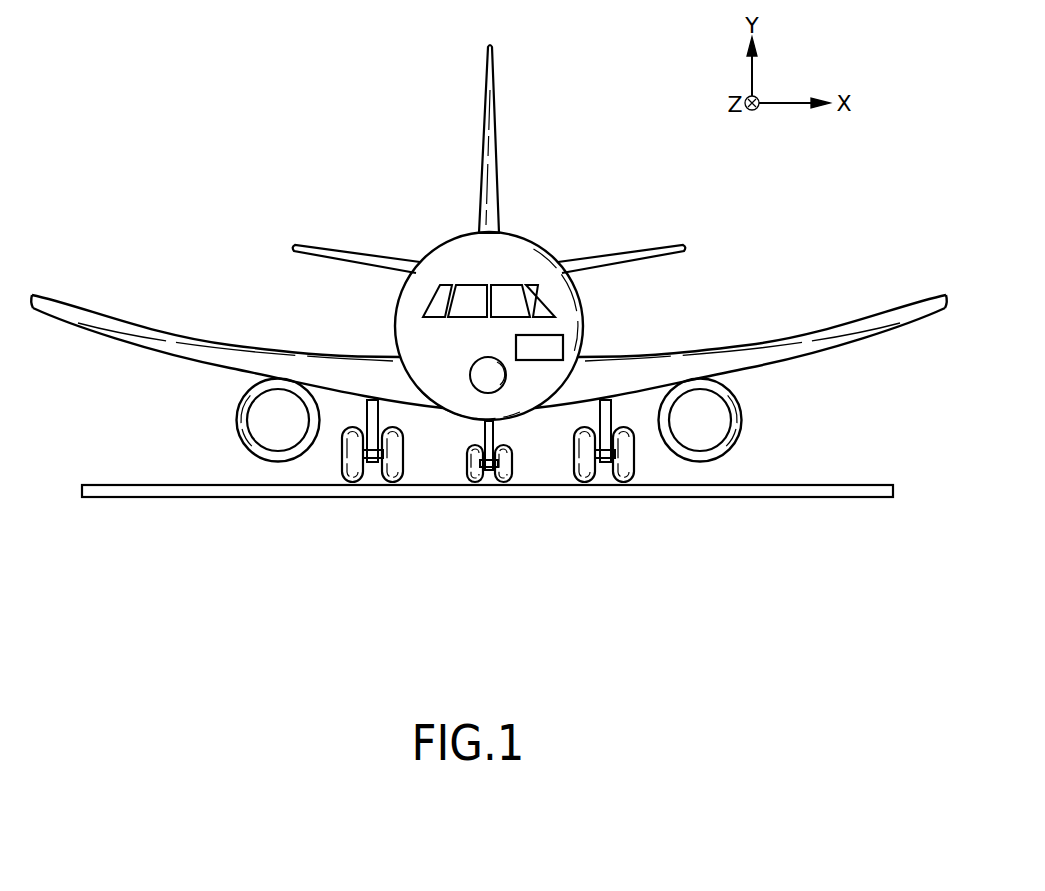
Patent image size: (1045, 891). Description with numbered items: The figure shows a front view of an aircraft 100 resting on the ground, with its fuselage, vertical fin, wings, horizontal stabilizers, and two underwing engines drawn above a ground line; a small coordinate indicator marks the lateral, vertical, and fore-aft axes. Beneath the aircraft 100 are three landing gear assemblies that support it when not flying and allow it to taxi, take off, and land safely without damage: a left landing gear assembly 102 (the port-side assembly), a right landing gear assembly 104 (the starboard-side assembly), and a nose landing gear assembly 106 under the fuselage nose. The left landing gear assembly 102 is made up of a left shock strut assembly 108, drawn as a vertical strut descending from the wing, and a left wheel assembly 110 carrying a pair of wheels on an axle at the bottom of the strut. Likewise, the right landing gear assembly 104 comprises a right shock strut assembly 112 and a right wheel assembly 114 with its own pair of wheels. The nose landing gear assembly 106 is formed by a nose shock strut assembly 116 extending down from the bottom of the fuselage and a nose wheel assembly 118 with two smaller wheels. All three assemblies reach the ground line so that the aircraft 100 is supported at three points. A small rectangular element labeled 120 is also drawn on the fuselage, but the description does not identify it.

The aircraft 100 is at (318, 128).
The left landing gear assembly 102 is at (652, 466).
The right landing gear assembly 104 is at (344, 404).
The nose landing gear assembly 106 is at (452, 474).
The left shock strut assembly 108 is at (600, 412).
The left wheel assembly 110 is at (603, 462).
The right shock strut assembly 112 is at (365, 452).
The right wheel assembly 114 is at (373, 458).
The nose shock strut assembly 116 is at (497, 427).
The nose wheel assembly 118 is at (490, 472).
The sensor unit 120 is at (552, 348).